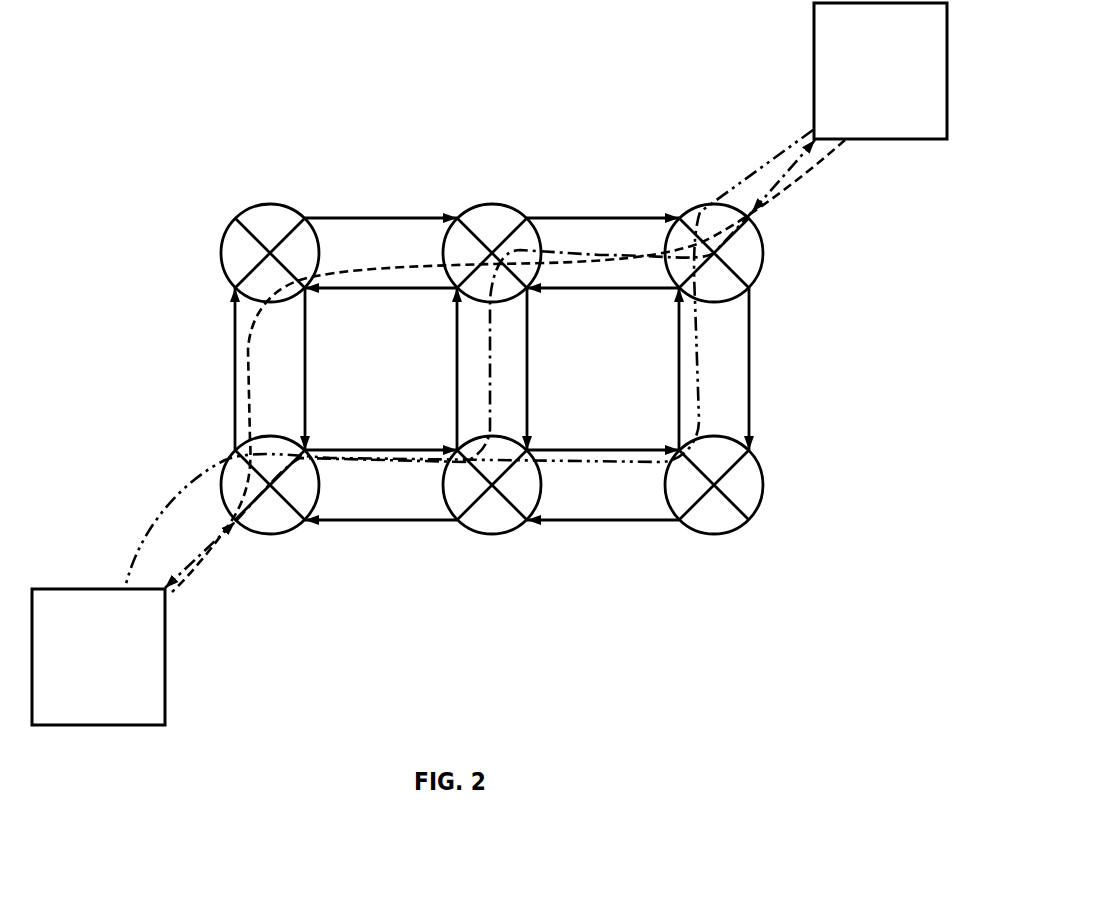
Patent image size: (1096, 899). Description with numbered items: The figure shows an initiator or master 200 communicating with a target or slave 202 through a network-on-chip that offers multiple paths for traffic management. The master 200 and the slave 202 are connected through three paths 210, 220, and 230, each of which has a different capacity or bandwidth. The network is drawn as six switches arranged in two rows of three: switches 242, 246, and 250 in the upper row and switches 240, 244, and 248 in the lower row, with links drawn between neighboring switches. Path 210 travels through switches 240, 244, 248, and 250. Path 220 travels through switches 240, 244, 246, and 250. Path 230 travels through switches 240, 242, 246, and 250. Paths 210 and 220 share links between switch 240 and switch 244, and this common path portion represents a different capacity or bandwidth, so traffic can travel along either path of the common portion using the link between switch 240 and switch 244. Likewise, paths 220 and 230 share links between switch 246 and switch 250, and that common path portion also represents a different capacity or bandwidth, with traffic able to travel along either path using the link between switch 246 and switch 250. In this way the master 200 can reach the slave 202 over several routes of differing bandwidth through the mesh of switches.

The master 200 is at (75, 688).
The slave 202 is at (904, 103).
The path 210 is at (705, 379).
The path 220 is at (490, 404).
The path 230 is at (357, 268).
The switch 240 is at (289, 526).
The switch 242 is at (287, 231).
The switch 244 is at (509, 526).
The switch 246 is at (509, 231).
The switch 248 is at (731, 526).
The switch 250 is at (756, 265).